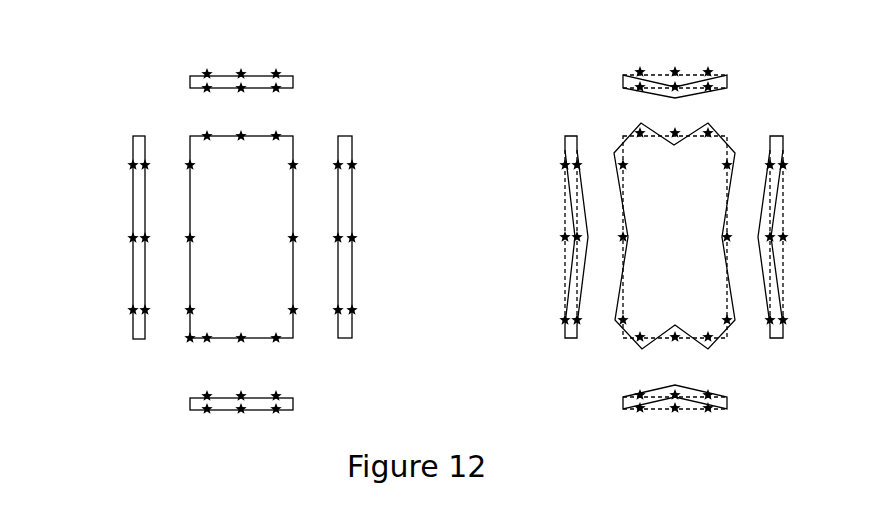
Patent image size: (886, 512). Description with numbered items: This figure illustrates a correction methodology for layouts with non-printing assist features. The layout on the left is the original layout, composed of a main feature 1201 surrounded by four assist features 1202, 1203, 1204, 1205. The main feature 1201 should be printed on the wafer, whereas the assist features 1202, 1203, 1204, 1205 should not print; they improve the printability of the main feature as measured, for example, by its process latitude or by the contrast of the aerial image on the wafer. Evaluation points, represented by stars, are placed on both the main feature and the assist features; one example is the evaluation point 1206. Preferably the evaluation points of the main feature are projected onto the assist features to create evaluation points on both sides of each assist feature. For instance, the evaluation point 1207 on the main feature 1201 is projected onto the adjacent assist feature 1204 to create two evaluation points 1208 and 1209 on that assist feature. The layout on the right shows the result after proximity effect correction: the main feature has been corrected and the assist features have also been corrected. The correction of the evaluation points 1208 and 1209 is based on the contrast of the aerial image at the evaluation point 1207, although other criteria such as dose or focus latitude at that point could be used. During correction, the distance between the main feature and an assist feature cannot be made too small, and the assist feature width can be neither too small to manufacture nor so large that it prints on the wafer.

The main feature 1201 is at (190, 143).
The assist feature 1202 is at (133, 197).
The assist feature 1203 is at (190, 74).
The assist feature 1204 is at (352, 135).
The assist feature 1205 is at (295, 402).
The evaluation point 1206 is at (203, 343).
The evaluation point 1207 is at (293, 238).
The evaluation point 1208 is at (352, 242).
The evaluation point 1209 is at (343, 247).